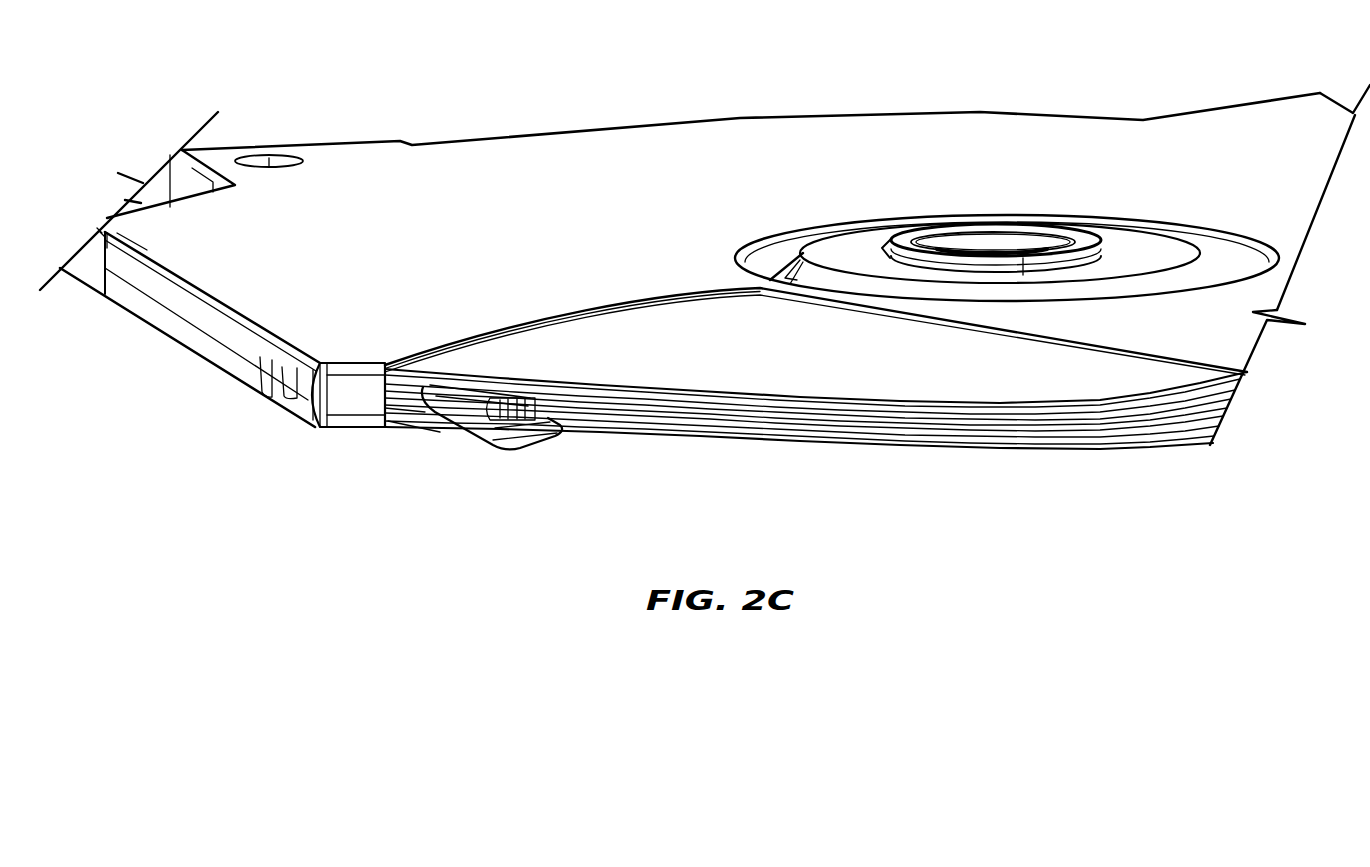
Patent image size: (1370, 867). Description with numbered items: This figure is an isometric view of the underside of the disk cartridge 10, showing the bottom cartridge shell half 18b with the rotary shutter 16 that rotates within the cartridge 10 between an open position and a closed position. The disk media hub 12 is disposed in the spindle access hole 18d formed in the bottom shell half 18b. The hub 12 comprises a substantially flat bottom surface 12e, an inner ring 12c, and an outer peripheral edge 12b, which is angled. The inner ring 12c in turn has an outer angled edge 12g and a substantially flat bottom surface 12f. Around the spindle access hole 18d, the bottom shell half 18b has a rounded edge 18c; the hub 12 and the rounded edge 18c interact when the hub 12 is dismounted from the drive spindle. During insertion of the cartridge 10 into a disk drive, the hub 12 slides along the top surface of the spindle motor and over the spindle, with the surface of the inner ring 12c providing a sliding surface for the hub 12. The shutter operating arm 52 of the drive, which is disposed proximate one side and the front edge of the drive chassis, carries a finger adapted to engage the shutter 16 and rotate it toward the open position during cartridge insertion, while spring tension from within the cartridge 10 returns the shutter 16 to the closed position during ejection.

The cartridge 10 is at (1056, 539).
The hub 12 is at (1090, 167).
The outer peripheral edge 12b is at (793, 280).
The inner ring 12c is at (913, 222).
The substantially flat bottom surface 12e is at (840, 253).
The substantially flat bottom surface 12f is at (893, 240).
The outer angled edge 12g is at (893, 240).
The rotary shutter 16 is at (618, 357).
The bottom cartridge shell half 18b is at (582, 148).
The rounded edge 18c is at (768, 248).
The spindle access hole 18d is at (768, 270).
The shutter operating arm 52 is at (481, 452).